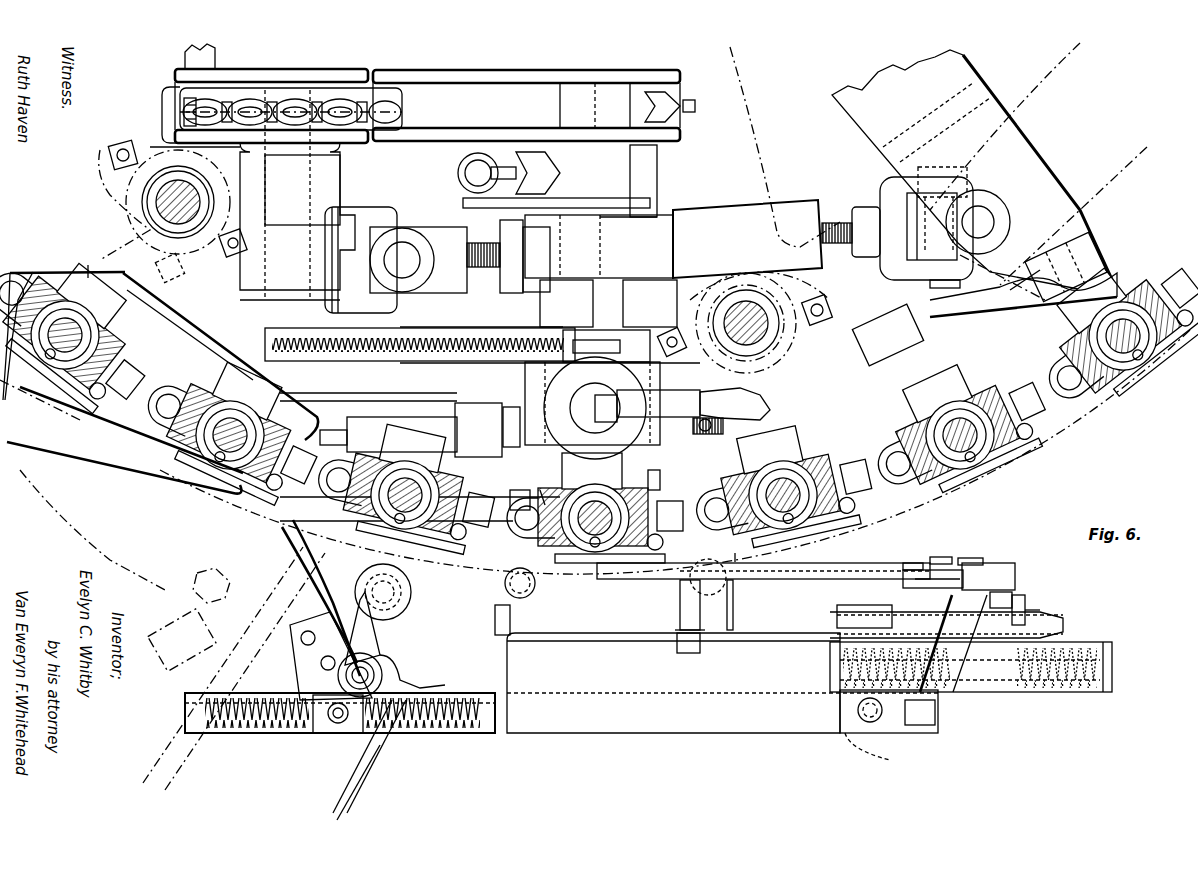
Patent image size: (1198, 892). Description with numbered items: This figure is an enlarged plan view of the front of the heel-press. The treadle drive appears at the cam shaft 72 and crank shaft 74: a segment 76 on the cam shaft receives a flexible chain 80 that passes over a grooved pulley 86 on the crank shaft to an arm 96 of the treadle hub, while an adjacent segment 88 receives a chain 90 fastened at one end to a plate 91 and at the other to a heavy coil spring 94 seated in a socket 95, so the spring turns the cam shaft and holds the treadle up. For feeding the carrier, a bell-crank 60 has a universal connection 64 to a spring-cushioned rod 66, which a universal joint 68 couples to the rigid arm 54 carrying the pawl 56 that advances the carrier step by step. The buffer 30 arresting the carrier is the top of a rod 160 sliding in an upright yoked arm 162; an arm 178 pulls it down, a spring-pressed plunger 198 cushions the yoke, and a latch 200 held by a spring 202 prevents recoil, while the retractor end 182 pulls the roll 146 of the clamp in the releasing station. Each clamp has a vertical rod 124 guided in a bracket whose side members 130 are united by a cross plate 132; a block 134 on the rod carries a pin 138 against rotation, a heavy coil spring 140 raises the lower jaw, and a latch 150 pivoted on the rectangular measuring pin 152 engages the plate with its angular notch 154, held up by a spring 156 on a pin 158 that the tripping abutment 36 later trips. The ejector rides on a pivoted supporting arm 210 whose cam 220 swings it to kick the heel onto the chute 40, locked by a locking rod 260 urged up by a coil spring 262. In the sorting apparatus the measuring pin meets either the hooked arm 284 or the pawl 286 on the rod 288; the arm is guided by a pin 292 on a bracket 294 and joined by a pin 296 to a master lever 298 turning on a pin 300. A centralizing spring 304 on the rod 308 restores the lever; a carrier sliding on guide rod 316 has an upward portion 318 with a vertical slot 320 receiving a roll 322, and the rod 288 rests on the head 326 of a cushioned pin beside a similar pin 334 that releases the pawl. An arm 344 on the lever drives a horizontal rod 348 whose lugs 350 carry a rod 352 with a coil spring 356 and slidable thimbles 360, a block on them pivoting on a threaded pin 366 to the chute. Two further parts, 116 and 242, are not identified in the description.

The buffer 30 is at (583, 403).
The tripping abutment 36 is at (185, 450).
The adjustable delivery chute 40 is at (345, 815).
The rigid arm 54 is at (1040, 172).
The pawl 56 is at (985, 344).
The bell-crank 60 is at (302, 228).
The universal connection 64 is at (402, 242).
The spring-cushioned rod 66 is at (692, 210).
The universal joint 68 is at (908, 212).
The cam shaft 72 is at (546, 70).
The crank shaft 74 is at (293, 92).
The segment 76 is at (436, 78).
The flexible chain 80 is at (372, 100).
The grooved pulley 86 is at (347, 97).
The segment 88 is at (645, 176).
The chain 90 is at (476, 240).
The plate 91 is at (550, 165).
The heavy coil spring 94 is at (465, 174).
The socket 95 is at (458, 166).
The arm 96 is at (185, 57).
The rocker bearing 116 is at (160, 220).
The vertical rod 124 is at (65, 320).
The side members 130 is at (112, 258).
The cross plate 132 is at (1045, 332).
The block 134 is at (352, 535).
The pin 138 is at (60, 272).
The heavy coil spring 140 is at (106, 318).
The roll 146 is at (1017, 370).
The latch 150 is at (166, 396).
The measuring pin 152 is at (468, 582).
The angular notch 154 is at (740, 540).
The spring 156 is at (106, 402).
The pin 158 is at (480, 555).
The rod 160 is at (573, 400).
The upright yoked arm 162 is at (580, 433).
The arm 178 is at (697, 303).
The retractor 182 is at (655, 476).
The spring-pressed plunger 198 is at (516, 490).
The latch 200 is at (727, 403).
The spring 202 is at (758, 425).
The pivoted supporting arm 210 is at (160, 482).
The cam 220 is at (85, 452).
The nut 242 is at (225, 388).
The locking rod 260 is at (375, 672).
The coil spring 262 is at (405, 690).
The arm 284 is at (906, 557).
The pawl 286 is at (516, 600).
The rod 288 is at (835, 578).
The pin 292 is at (680, 613).
The bracket 294 is at (745, 600).
The pin 296 is at (932, 570).
The master lever 298 is at (990, 575).
The pin 300 is at (972, 558).
The centralizing spring 304 is at (890, 752).
The rod 308 is at (845, 735).
The guide rod 316 is at (1068, 620).
The upwardly projecting portion 318 is at (1040, 610).
The vertical slot 320 is at (1025, 604).
The roll 322 is at (1012, 598).
The head 326 is at (728, 590).
The pin 334 is at (483, 616).
The arm 344 is at (940, 690).
The horizontal rod 348 is at (735, 733).
The lugs 350 is at (200, 733).
The rod 352 is at (440, 733).
The coil spring 356 is at (287, 733).
The thimbles 360 is at (325, 733).
The threaded pin 366 is at (372, 760).